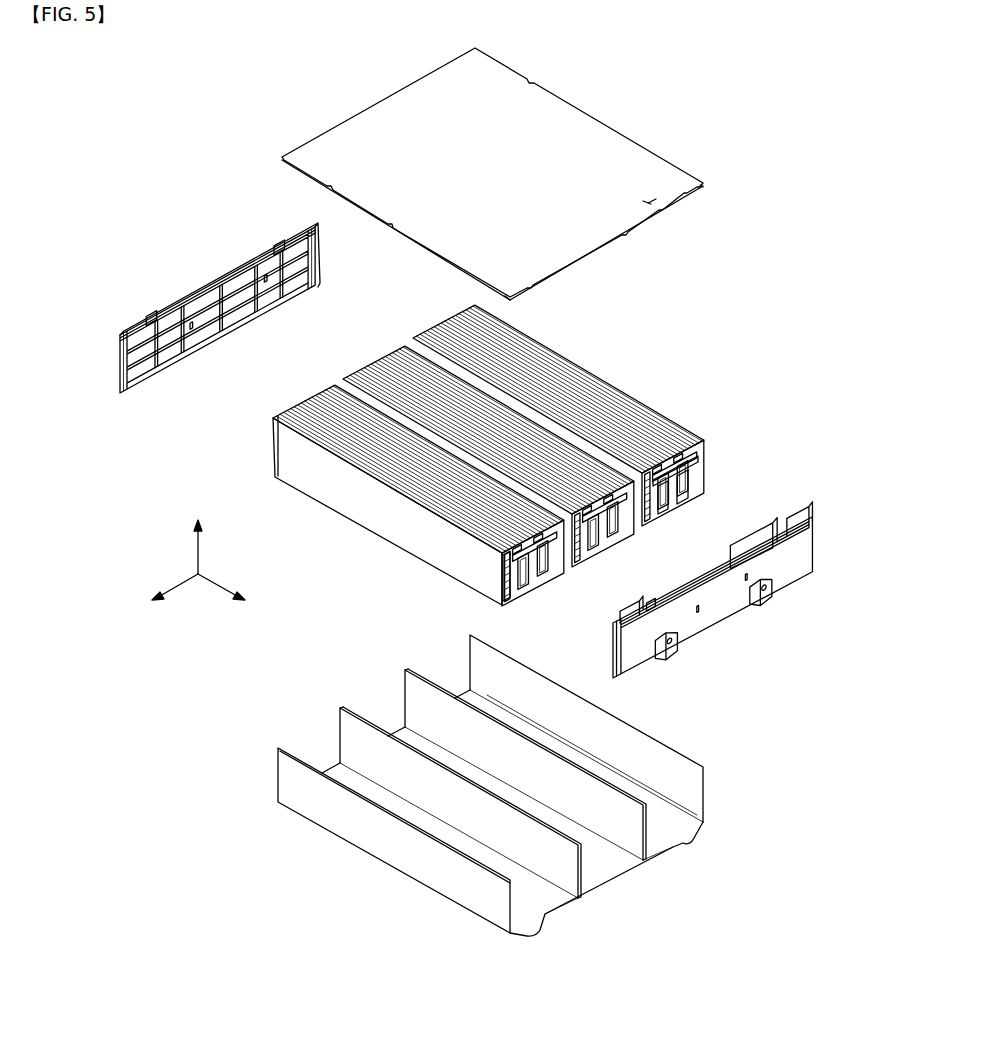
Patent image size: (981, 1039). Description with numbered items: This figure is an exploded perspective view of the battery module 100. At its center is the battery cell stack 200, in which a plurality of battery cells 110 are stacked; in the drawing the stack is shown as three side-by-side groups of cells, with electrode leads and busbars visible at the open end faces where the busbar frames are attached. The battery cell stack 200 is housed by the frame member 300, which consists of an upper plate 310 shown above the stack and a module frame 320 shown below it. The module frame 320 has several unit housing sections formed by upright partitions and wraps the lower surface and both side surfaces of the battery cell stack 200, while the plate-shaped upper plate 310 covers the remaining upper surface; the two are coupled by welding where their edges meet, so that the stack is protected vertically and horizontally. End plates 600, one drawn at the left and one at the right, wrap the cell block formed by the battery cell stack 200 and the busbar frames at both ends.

The battery module 100 is at (206, 61).
The battery cell 110 is at (583, 391).
The battery cell stack 200 is at (655, 395).
The frame member 300 is at (777, 231).
The upper plate 310 is at (600, 141).
The module frame 320 is at (721, 803).
The end plate 600 is at (210, 287).